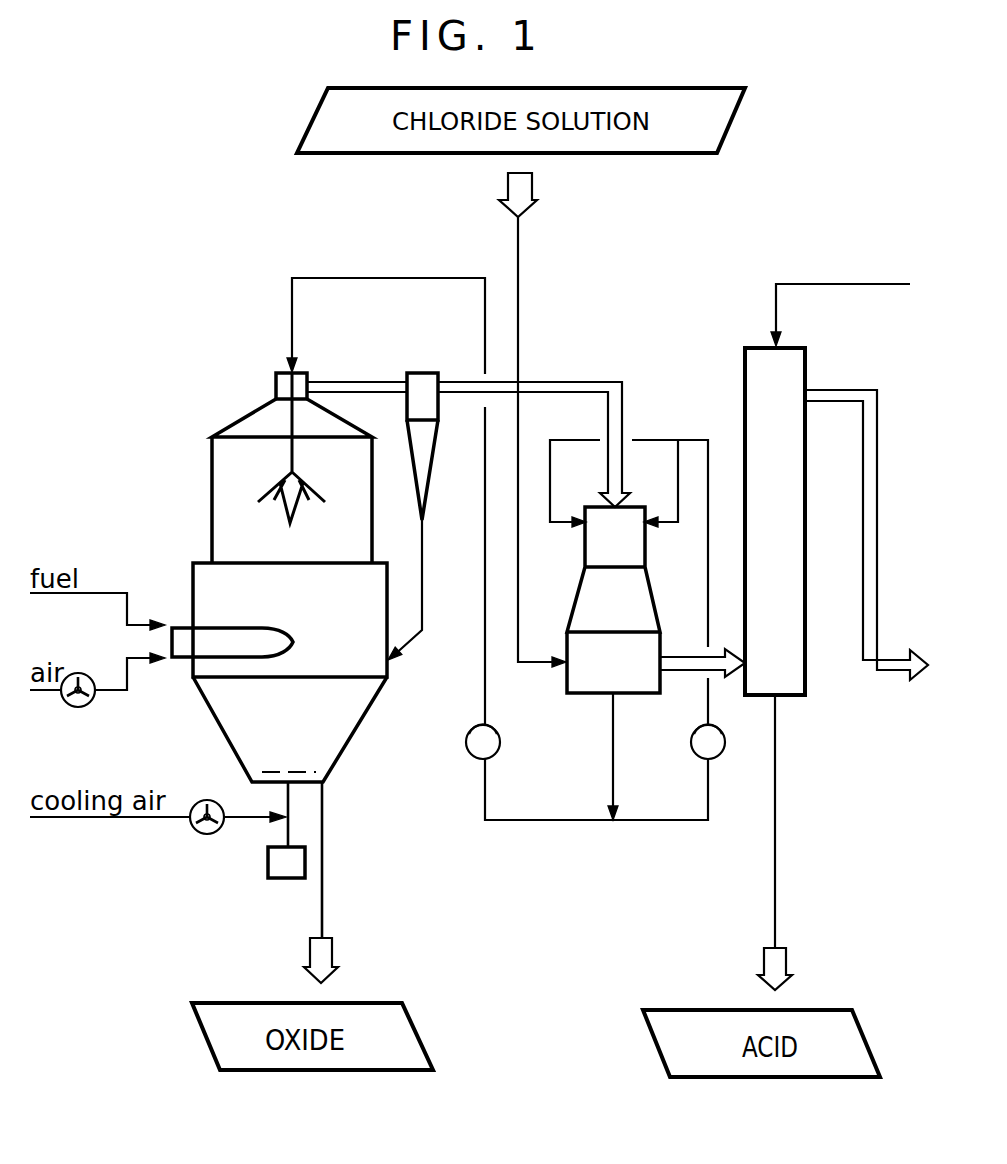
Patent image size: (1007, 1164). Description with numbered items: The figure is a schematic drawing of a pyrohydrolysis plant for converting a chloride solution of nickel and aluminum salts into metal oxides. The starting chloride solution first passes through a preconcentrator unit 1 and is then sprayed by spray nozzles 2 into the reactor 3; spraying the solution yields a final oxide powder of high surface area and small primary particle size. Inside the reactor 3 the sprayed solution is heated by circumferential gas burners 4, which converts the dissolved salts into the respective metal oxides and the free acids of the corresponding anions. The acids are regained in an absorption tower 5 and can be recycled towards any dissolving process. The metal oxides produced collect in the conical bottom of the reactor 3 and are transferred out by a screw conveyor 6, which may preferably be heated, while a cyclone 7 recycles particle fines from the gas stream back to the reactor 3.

The preconcentrator unit 1 is at (613, 600).
The spray nozzles 2 is at (291, 463).
The reactor 3 is at (210, 490).
The circumferential gas burners 4 is at (232, 644).
The absorption tower 5 is at (775, 521).
The screw conveyor 6 is at (308, 817).
The cyclone 7 is at (420, 372).